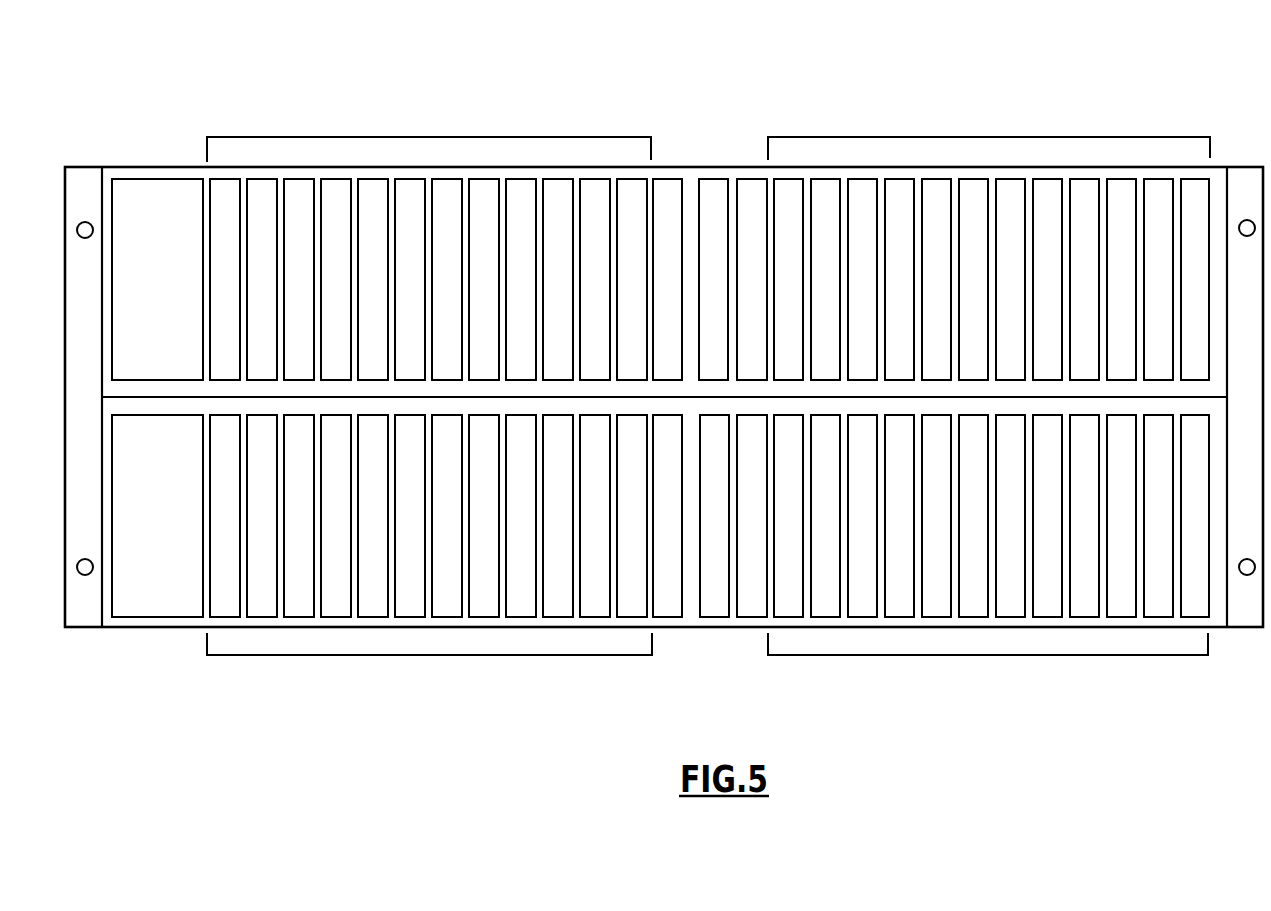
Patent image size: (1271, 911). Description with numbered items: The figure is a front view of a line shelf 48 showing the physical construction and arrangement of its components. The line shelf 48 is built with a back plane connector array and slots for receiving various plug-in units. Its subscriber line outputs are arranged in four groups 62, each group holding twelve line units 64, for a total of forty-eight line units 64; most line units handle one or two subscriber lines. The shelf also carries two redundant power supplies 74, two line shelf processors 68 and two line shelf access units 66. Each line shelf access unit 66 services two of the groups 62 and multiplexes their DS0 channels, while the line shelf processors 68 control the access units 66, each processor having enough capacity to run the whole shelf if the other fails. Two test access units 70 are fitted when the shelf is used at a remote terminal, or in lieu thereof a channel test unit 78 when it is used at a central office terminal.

The line shelf 48 is at (712, 68).
The group of subscriber line outputs 62 is at (470, 97).
The line unit 64 is at (302, 617).
The line shelf access unit 66 is at (712, 178).
The line shelf processor 68 is at (668, 178).
The test access unit 70 is at (748, 178).
The channel test unit 78 is at (747, 617).
The power supply 74 is at (174, 320).